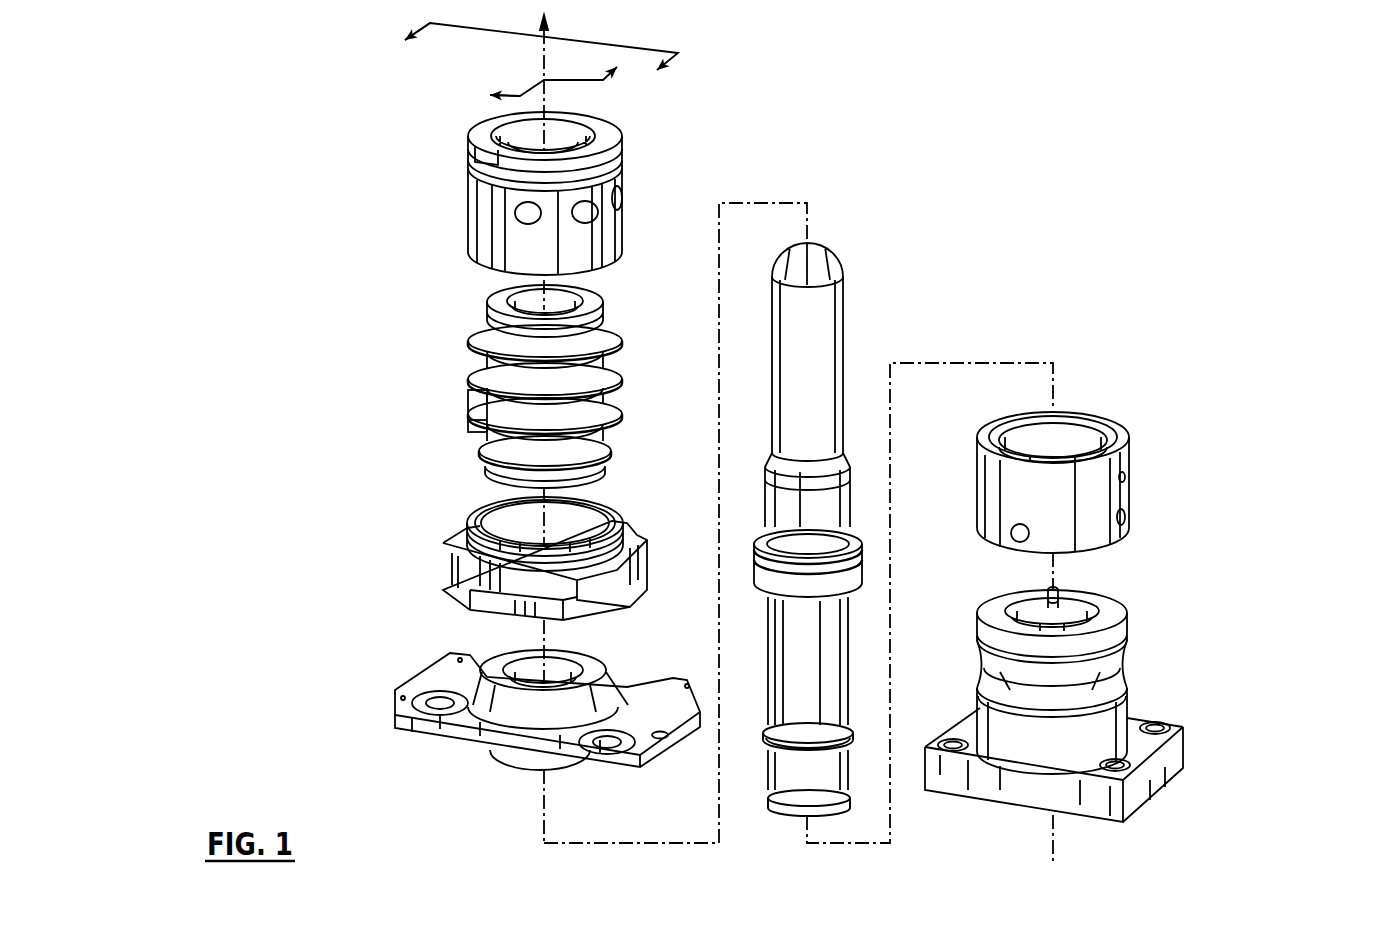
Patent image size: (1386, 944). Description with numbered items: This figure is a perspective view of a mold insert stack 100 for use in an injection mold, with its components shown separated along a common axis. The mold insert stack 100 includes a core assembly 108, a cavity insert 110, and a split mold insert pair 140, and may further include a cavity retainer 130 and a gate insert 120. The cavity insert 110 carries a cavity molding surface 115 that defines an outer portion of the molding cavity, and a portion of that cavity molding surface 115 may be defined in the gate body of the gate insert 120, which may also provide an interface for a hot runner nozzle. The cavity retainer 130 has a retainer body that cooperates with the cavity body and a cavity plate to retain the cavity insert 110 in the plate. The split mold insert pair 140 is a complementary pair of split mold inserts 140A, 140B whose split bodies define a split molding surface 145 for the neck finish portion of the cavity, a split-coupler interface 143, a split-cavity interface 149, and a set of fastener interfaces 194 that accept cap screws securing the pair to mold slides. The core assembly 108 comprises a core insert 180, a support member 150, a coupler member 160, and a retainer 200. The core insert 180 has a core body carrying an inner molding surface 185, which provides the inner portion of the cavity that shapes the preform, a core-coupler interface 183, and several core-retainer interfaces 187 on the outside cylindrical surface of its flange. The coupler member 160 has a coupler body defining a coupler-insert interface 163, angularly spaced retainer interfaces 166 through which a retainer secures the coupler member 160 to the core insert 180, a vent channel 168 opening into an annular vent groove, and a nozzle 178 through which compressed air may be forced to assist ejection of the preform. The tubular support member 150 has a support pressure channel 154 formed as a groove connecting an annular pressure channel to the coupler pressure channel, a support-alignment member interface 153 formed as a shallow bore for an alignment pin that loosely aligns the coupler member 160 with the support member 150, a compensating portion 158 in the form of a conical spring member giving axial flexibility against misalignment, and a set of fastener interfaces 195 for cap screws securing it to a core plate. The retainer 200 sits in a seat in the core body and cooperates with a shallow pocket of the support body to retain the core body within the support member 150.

The mold insert stack 100 is at (1014, 132).
The core assembly 108 is at (1126, 520).
The cavity insert 110 is at (591, 356).
The cavity molding surface 115 is at (548, 299).
The gate insert 120 is at (653, 192).
The cavity retainer 130 is at (647, 517).
The split mold insert pair 140 is at (529, 743).
The split mold insert 140A is at (477, 763).
The split mold insert 140B is at (524, 803).
The split-coupler interface 143 is at (480, 747).
The split molding surface 145 is at (580, 672).
The split-cavity interface 149 is at (498, 647).
The set of fastener interfaces 194 is at (623, 760).
The support member 150 is at (1106, 685).
The support-alignment member interface 153 is at (1120, 613).
The support pressure channel 154 is at (1060, 590).
The compensating portion 158 is at (1127, 660).
The set of fastener interfaces 195 is at (1167, 717).
The coupler member 160 is at (1115, 448).
The coupler-insert interface 163 is at (1060, 435).
The retainer interface 166 is at (1127, 517).
The vent channel 168 is at (1123, 477).
The nozzle 178 is at (1060, 455).
The core insert 180 is at (860, 520).
The core-coupler interface 183 is at (870, 548).
The inner molding surface 185 is at (828, 328).
The core-retainer interface 187 is at (863, 575).
The retainer 200 is at (844, 548).